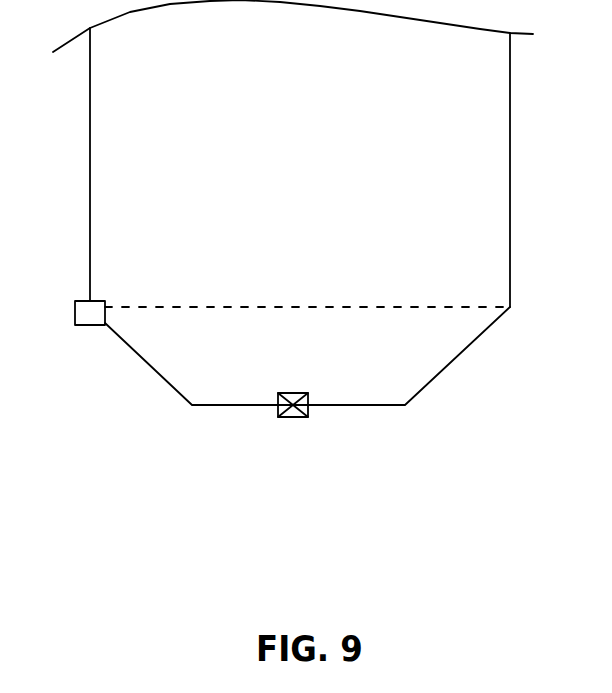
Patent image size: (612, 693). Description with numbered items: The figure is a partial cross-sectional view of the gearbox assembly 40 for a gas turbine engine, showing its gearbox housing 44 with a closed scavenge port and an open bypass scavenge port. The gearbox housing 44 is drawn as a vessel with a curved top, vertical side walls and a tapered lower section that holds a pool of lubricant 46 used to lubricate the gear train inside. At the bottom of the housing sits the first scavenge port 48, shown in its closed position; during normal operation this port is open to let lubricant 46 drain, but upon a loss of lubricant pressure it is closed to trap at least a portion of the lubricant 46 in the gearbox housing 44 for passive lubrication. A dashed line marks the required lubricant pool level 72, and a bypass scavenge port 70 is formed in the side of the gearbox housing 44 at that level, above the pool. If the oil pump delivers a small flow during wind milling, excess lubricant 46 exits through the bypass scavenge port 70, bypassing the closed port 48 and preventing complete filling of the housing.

The gearbox assembly 40 is at (511, 182).
The gearbox housing 44 is at (511, 246).
The lubricant 46 is at (306, 355).
The first scavenge port 48 is at (292, 419).
The bypass scavenge port 70 is at (75, 313).
The required lubricant pool level 72 is at (393, 306).